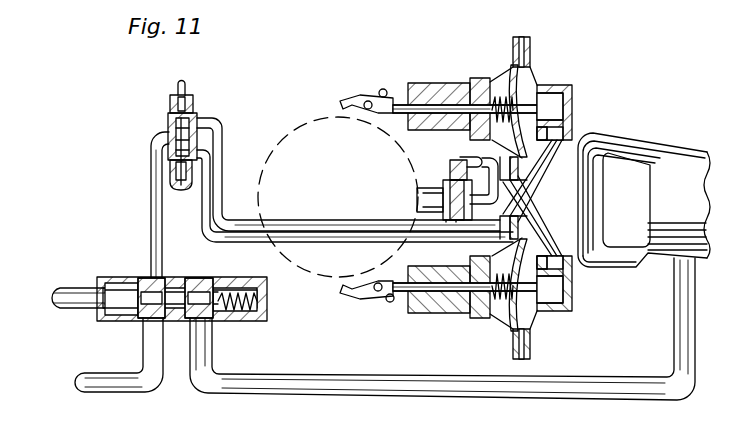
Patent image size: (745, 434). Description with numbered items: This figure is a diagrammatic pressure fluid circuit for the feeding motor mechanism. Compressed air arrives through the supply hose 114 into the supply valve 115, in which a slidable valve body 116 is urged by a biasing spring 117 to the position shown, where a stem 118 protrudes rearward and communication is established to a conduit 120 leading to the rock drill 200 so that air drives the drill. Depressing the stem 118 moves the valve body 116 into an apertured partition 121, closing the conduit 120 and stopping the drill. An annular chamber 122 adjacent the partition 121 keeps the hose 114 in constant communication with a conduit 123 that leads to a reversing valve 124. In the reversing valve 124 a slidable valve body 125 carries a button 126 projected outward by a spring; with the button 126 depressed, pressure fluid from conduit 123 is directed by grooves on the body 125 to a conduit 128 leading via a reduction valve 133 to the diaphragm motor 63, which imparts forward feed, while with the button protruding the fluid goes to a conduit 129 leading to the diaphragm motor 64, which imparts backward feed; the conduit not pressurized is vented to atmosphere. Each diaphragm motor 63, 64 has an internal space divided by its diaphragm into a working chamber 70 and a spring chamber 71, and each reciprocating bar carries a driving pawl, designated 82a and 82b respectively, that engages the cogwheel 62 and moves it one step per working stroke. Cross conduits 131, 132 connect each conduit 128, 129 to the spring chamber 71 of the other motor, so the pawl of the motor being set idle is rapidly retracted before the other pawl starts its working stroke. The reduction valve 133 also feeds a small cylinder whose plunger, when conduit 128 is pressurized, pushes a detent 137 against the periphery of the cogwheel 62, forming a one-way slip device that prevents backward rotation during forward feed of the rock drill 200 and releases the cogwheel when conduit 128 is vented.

The cogwheel 62 is at (324, 114).
The diaphragm motor 63 is at (541, 78).
The diaphragm motor 64 is at (530, 334).
The working chamber 70 is at (515, 73).
The spring chamber 71 is at (505, 87).
The driving pawl 82a is at (356, 97).
The driving pawl 82b is at (368, 297).
The supply hose 114 is at (112, 388).
The supply valve 115 is at (112, 280).
The valve body 116 is at (128, 306).
The biasing spring 117 is at (242, 310).
The stem 118 is at (72, 306).
The conduit 120 is at (444, 391).
The apertured partition 121 is at (176, 280).
The annular chamber 122 is at (150, 282).
The conduit 123 is at (151, 204).
The reversing valve 124 is at (193, 95).
The valve body 125 is at (170, 130).
The button 126 is at (175, 93).
The conduit 128 is at (318, 226).
The conduit 129 is at (340, 238).
The cross conduit 131 is at (560, 165).
The cross conduit 132 is at (563, 235).
The reduction valve 133 is at (452, 166).
The detent 137 is at (422, 203).
The rock drill 200 is at (675, 165).